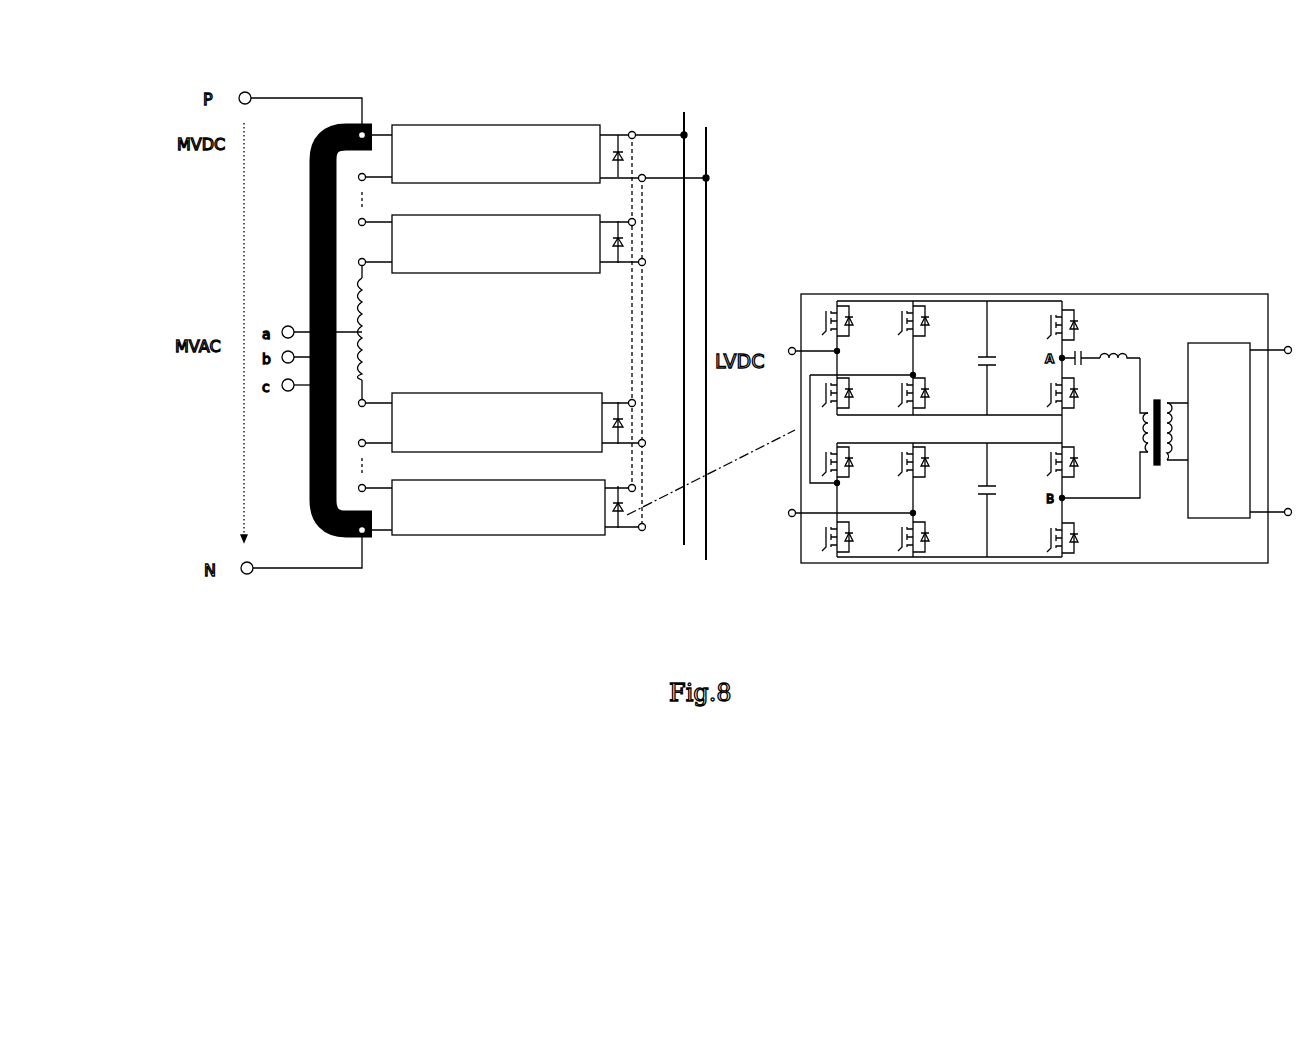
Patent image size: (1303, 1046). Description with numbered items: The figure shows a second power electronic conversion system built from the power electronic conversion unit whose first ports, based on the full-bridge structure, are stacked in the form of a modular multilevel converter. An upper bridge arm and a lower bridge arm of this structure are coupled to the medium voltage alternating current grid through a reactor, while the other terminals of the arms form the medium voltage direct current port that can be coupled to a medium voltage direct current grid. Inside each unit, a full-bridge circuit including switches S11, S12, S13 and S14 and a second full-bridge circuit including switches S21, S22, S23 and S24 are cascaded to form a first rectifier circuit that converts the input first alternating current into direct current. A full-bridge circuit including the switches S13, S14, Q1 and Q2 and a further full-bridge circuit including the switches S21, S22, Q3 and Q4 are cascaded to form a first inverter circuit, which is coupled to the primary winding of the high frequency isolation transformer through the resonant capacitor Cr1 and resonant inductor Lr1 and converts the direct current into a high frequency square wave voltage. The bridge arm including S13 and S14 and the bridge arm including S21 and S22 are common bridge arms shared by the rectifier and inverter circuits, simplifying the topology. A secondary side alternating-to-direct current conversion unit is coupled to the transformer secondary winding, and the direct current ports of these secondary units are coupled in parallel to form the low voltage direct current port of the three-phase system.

The switch S11 is at (827, 321).
The switch S12 is at (851, 393).
The switch S13 is at (901, 321).
The switch S14 is at (905, 393).
The switch S21 is at (846, 471).
The switch S22 is at (827, 537).
The switch S23 is at (908, 471).
The switch S24 is at (902, 537).
The switch Q1 is at (1051, 325).
The switch Q2 is at (1051, 393).
The switch Q3 is at (1051, 462).
The switch Q4 is at (1051, 538).
The resonant capacitor Cr1 is at (1081, 367).
The resonant inductor Lr1 is at (1120, 365).